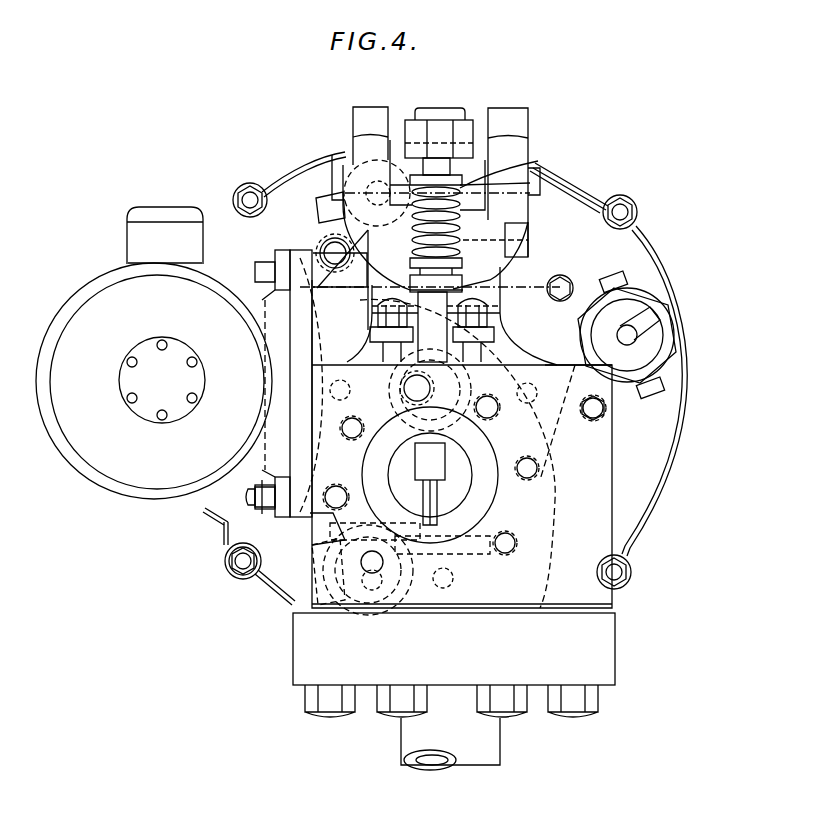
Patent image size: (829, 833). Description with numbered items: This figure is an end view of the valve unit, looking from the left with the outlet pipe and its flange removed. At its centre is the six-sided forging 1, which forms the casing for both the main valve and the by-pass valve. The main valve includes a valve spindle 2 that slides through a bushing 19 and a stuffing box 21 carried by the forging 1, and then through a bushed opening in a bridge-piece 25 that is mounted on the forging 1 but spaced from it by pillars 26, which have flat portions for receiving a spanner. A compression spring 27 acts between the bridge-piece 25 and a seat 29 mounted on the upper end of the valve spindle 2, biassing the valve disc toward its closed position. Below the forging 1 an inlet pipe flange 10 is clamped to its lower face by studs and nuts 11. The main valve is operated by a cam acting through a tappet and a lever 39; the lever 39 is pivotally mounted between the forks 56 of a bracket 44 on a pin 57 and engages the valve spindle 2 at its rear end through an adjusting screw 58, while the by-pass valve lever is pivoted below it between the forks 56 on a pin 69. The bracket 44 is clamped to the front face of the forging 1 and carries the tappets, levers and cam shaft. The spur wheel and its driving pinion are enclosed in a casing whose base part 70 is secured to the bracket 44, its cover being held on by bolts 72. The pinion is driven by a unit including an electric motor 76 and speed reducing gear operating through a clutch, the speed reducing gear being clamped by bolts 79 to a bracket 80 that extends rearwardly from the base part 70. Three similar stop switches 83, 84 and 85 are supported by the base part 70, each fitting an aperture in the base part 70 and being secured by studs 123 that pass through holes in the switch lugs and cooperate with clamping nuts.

The six-sided forging 1 is at (598, 530).
The valve spindle 2 is at (430, 487).
The inlet pipe flange 10 is at (465, 691).
The studs and nuts 11 is at (505, 713).
The bushing 19 is at (440, 458).
The stuffing box 21 is at (500, 349).
The bridge-piece 25 is at (470, 280).
The pillars 26 is at (446, 302).
The compression spring 27 is at (512, 230).
The seat 29 is at (522, 176).
The lever 39 is at (446, 128).
The bracket 44 is at (495, 315).
The forks 56 is at (358, 158).
The pin 57 is at (545, 185).
The adjusting screw 58 is at (440, 162).
The pin 69 is at (524, 241).
The base part 70 is at (640, 487).
The bolts 72 is at (638, 212).
The electric motor 76 is at (100, 458).
The bolts 79 is at (258, 494).
The bracket 80 is at (262, 500).
The stop switch 83 is at (634, 326).
The stop switch 84 is at (330, 152).
The stop switch 85 is at (292, 600).
The studs 123 is at (322, 250).